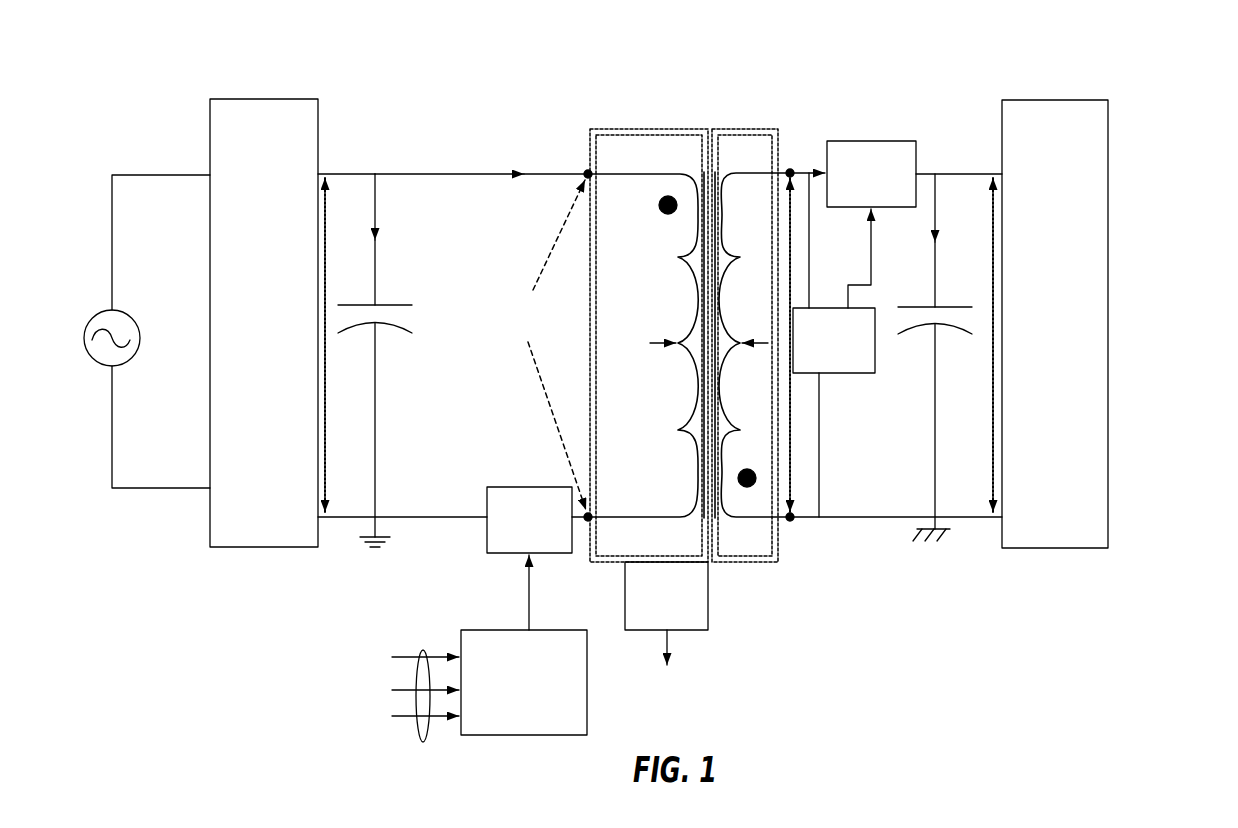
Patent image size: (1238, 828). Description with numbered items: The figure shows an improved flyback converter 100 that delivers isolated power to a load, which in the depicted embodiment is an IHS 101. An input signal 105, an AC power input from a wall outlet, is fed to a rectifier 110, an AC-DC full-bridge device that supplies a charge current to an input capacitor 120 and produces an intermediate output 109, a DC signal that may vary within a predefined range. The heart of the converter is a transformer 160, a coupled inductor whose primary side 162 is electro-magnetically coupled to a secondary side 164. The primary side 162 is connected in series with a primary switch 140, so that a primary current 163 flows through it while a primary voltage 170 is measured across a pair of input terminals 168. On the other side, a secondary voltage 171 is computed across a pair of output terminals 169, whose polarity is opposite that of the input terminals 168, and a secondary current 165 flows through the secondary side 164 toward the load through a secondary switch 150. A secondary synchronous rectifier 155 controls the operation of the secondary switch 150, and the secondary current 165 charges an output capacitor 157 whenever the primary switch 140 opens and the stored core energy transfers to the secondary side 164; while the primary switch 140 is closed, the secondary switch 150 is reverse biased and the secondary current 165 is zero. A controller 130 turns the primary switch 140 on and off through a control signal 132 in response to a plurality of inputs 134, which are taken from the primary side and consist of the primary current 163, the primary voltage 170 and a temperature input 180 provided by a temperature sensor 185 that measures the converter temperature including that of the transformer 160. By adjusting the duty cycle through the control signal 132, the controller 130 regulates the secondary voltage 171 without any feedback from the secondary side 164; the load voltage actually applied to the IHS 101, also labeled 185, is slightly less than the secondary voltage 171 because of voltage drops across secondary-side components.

The flyback converter 100 is at (1088, 33).
The IHS 101 is at (1042, 364).
The input signal 105 is at (127, 368).
The intermediate output 109 is at (327, 232).
The rectifier 110 is at (251, 344).
The input capacitor 120 is at (340, 305).
The controller 130 is at (511, 704).
The control signal 132 is at (527, 610).
The plurality of inputs 134 is at (400, 652).
The primary switch 140 is at (516, 541).
The secondary switch 150 is at (858, 194).
The secondary synchronous rectifier 155 is at (821, 362).
The output capacitor 157 is at (963, 308).
The transformer 160 is at (689, 352).
The primary side 162 is at (612, 130).
The primary current 163 is at (507, 176).
The secondary side 164 is at (740, 130).
The secondary current 165 is at (803, 168).
The pair of input terminals 168 is at (588, 170).
The pair of output terminals 169 is at (787, 168).
The primary voltage 170 is at (522, 345).
The secondary voltage 171 is at (790, 458).
The temperature input 180 is at (667, 661).
The temperature sensor 185 is at (654, 631).